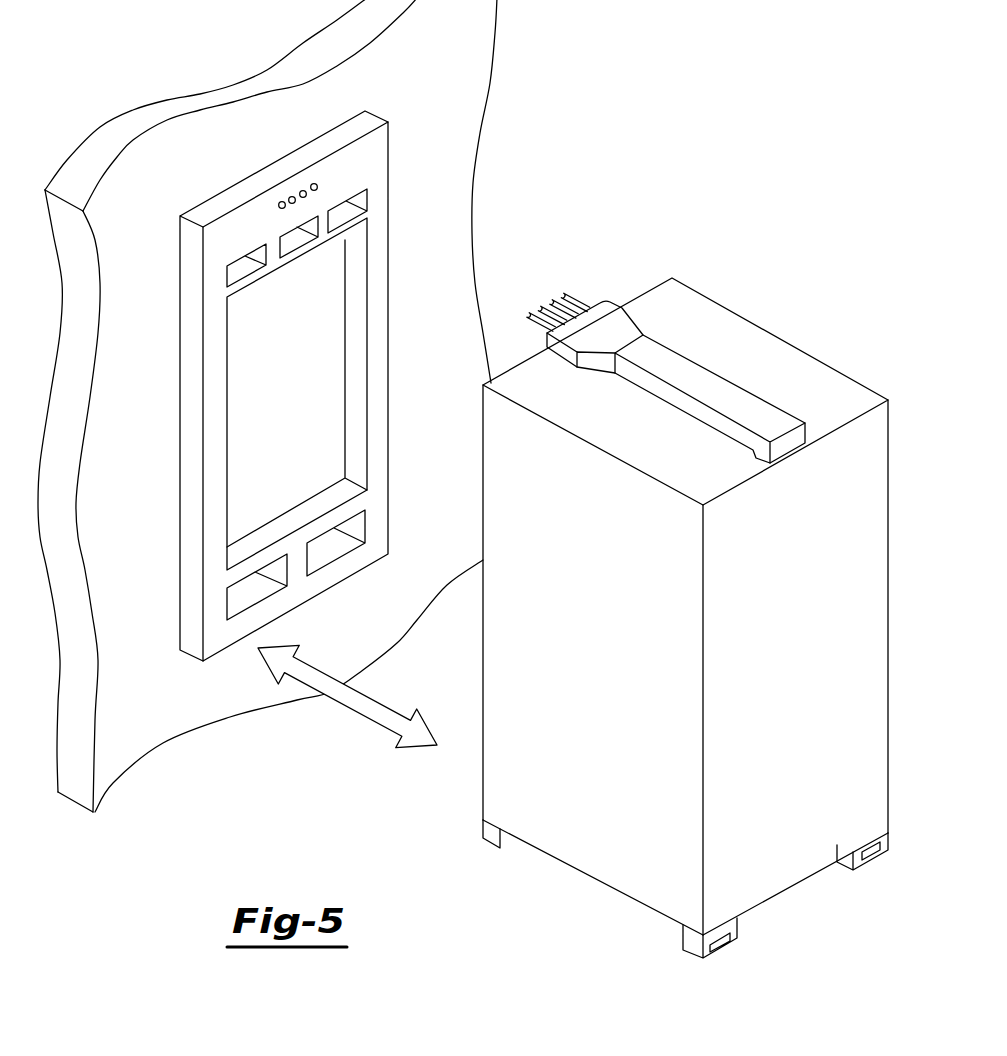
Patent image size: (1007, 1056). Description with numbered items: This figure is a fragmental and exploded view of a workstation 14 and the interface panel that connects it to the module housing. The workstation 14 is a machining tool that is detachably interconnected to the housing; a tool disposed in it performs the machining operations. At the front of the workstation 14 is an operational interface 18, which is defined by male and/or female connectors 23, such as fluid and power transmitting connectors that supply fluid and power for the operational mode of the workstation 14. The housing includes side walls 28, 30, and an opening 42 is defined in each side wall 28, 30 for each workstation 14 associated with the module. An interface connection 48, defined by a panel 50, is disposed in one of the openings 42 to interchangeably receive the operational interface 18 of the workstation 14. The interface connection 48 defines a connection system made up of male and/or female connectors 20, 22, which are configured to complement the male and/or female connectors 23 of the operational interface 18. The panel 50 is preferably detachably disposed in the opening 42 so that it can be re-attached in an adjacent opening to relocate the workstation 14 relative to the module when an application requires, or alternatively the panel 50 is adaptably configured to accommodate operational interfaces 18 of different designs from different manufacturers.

The workstation 14 is at (734, 314).
The operational interface 18 is at (650, 287).
The male and/or female connectors 20 is at (279, 209).
The male and/or female connectors 22 is at (343, 212).
The male and/or female connectors 23 is at (577, 297).
The side wall 28 is at (320, 406).
The side wall 30 is at (460, 23).
The opening 42 is at (362, 123).
The interface connection 48 is at (321, 353).
The panel 50 is at (380, 463).